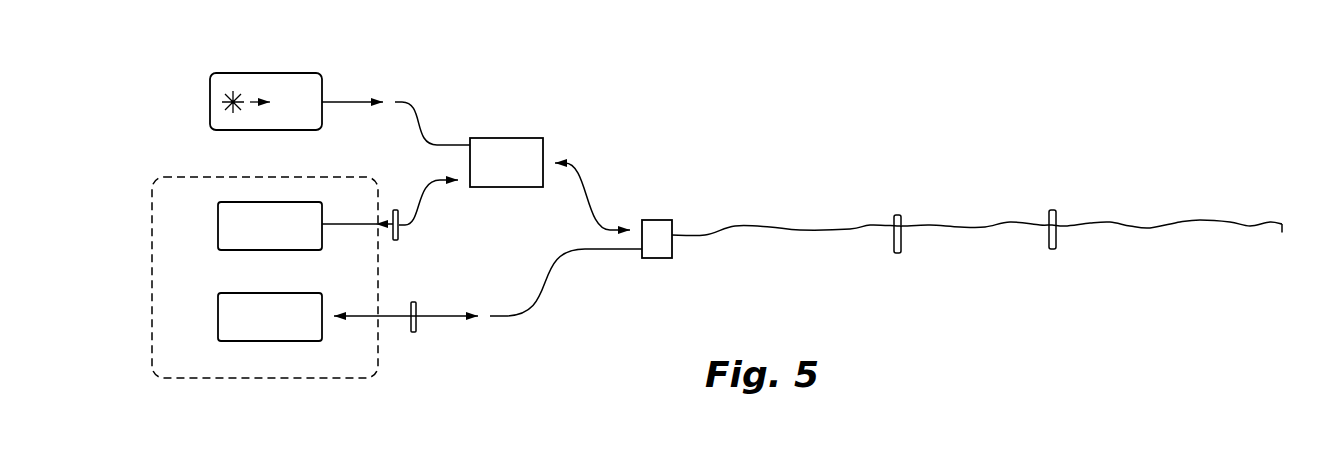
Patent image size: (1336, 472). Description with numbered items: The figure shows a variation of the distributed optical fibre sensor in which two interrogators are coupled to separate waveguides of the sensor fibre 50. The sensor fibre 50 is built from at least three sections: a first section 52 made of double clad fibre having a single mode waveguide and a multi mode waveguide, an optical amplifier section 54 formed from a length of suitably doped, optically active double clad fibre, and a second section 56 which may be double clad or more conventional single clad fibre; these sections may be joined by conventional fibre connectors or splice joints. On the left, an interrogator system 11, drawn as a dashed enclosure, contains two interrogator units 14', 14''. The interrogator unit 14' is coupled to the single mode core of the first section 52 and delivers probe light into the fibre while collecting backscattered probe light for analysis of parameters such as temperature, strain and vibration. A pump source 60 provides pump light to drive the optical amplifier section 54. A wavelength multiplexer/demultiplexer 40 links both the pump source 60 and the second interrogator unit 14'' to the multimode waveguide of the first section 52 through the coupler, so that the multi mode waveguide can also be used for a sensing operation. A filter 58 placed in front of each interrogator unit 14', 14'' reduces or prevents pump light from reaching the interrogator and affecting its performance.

The interrogator system 11 is at (378, 357).
The interrogator unit 14' is at (249, 313).
The second interrogator unit 14'' is at (251, 219).
The wavelength multiplexer/demultiplexer 40 is at (520, 138).
The sensor fibre 50 is at (872, 120).
The first section 52 is at (757, 223).
The optical amplifier section 54 is at (931, 223).
The second section 56 is at (1087, 223).
The filter 58 is at (397, 230).
The pump source 60 is at (300, 73).